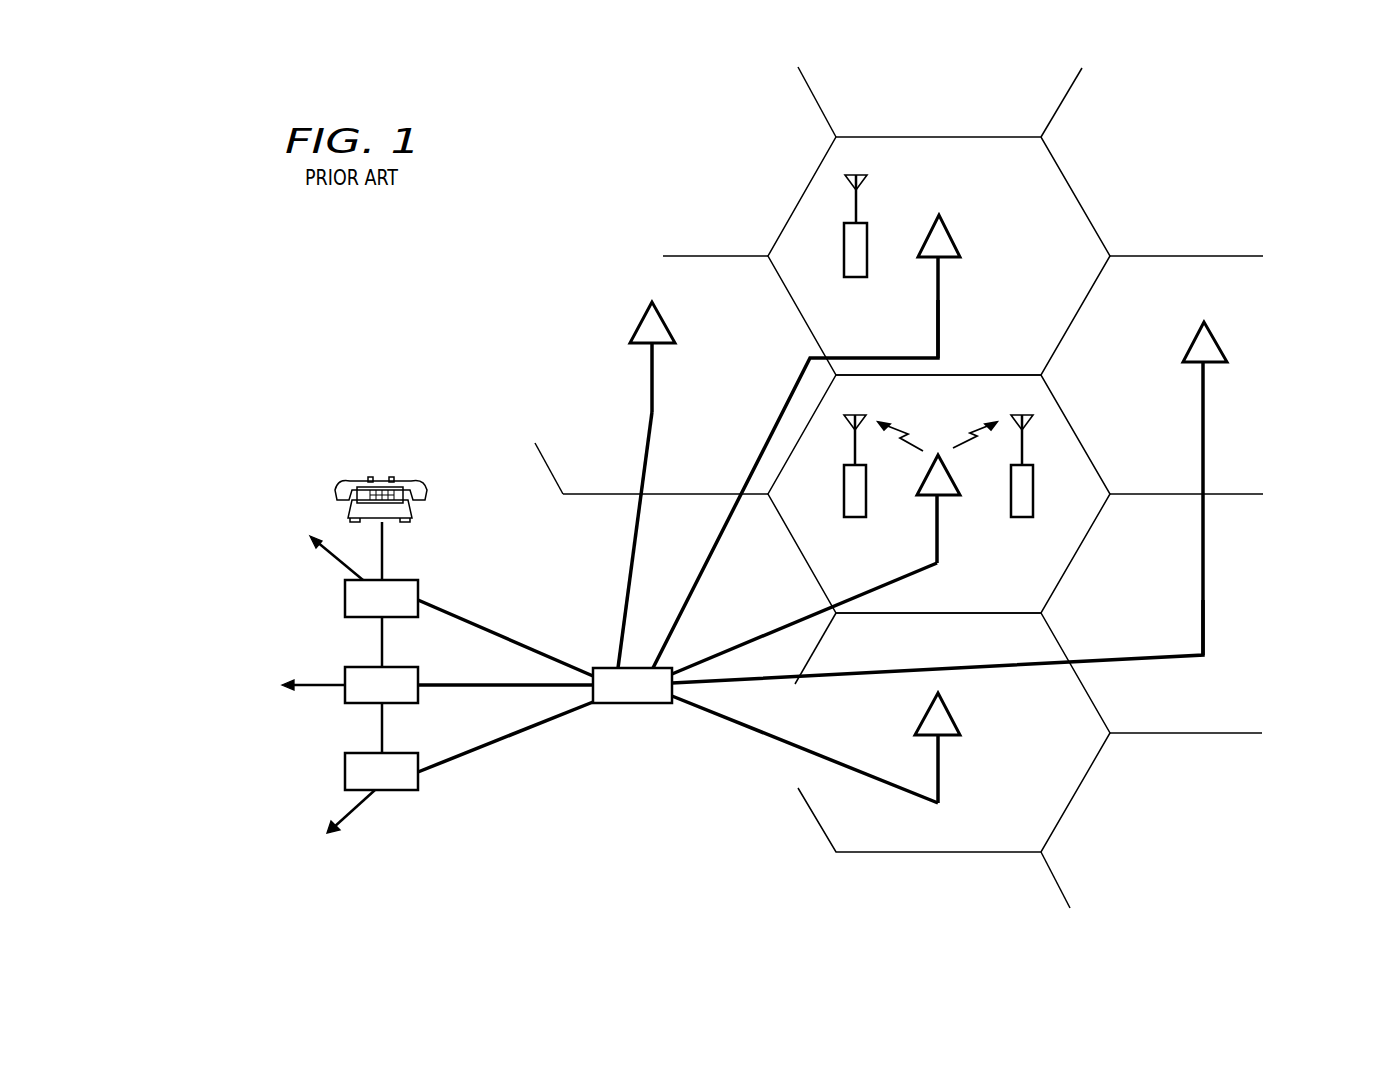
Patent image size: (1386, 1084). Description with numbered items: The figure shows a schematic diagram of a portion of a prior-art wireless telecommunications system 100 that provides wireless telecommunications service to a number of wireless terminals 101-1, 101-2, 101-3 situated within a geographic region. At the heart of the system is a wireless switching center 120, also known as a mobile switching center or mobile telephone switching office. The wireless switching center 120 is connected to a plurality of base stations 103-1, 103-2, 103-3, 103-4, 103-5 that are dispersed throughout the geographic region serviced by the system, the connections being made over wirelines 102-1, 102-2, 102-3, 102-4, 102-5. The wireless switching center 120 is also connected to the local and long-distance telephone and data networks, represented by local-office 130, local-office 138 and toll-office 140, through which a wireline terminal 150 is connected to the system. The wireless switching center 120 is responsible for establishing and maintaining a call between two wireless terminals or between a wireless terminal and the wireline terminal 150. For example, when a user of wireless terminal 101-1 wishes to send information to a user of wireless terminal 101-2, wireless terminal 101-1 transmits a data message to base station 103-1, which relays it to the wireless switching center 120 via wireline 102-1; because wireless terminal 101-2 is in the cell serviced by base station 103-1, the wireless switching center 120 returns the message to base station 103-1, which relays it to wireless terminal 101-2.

The wireless telecommunications system 100 is at (371, 243).
The wireless terminal 101-1 is at (855, 518).
The wireless terminal 101-2 is at (1022, 518).
The wireless terminal 101-3 is at (856, 278).
The wireline 102-1 is at (757, 637).
The wireline 102-2 is at (713, 552).
The wireline 102-3 is at (620, 608).
The wireline 102-4 is at (757, 684).
The wireline 102-5 is at (740, 722).
The base station 103-1 is at (938, 540).
The base station 103-2 is at (940, 292).
The base station 103-3 is at (654, 380).
The base station 103-4 is at (1205, 412).
The base station 103-5 is at (940, 778).
The wireless switching center 120 is at (632, 704).
The local-office 130 is at (345, 600).
The local-office 138 is at (345, 773).
The toll-office 140 is at (345, 668).
The wireline terminal 150 is at (386, 470).